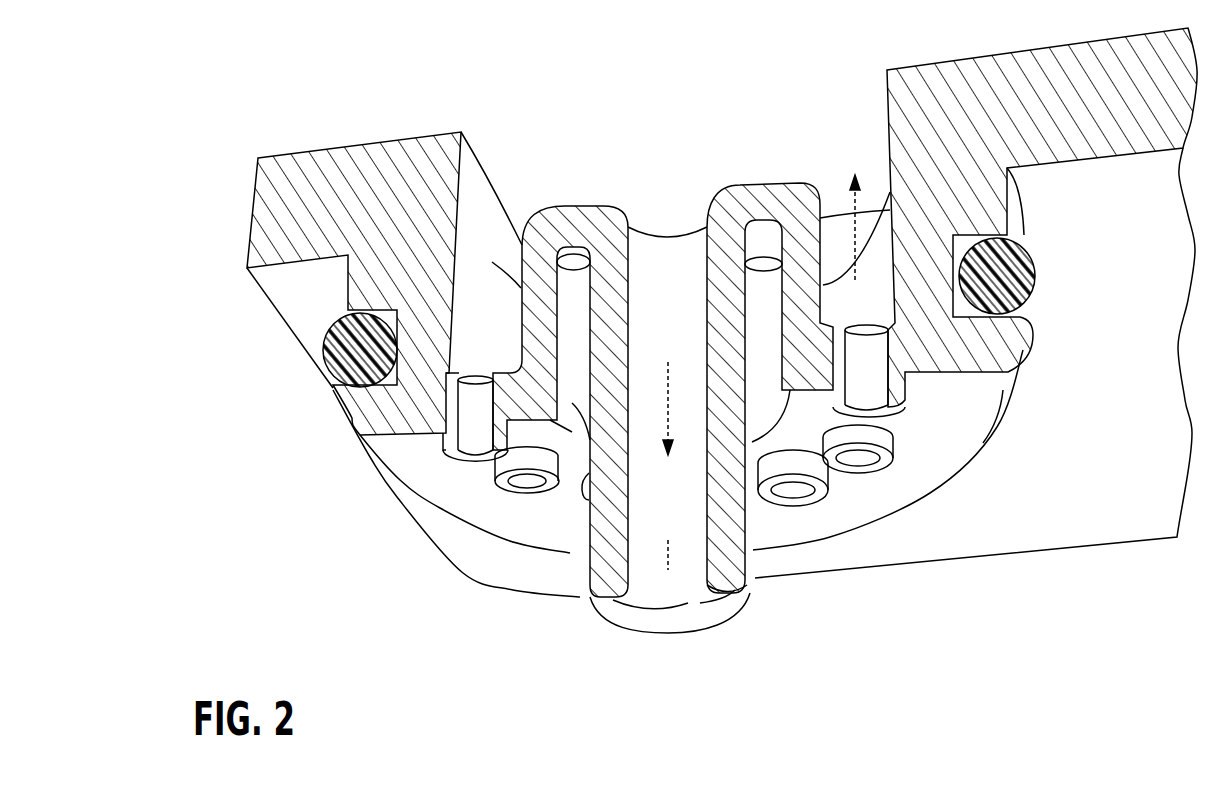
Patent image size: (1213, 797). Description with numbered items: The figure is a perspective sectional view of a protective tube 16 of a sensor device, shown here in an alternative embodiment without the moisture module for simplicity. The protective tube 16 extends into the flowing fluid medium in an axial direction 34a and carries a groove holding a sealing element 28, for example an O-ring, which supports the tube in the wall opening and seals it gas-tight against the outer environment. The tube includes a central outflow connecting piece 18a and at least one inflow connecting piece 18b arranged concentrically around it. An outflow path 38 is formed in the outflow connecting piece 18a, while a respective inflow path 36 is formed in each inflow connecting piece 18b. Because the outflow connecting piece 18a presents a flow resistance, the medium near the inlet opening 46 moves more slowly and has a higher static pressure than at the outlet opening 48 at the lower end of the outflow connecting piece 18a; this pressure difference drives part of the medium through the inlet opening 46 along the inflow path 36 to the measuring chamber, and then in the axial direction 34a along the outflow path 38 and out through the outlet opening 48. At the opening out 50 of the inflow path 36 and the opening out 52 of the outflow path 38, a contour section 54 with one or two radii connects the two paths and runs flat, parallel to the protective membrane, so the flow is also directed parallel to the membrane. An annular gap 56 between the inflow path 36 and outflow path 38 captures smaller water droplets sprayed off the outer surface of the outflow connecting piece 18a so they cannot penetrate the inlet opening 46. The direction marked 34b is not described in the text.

The protective tube 16 is at (286, 436).
The outflow connecting piece 18a is at (745, 588).
The inflow connecting piece 18b is at (884, 457).
The sealing element 28 is at (348, 347).
The axial direction 34a is at (612, 565).
The second channel 34b is at (870, 227).
The inflow path 36 is at (880, 260).
The outflow path 38 is at (668, 263).
The inlet opening 46 is at (477, 447).
The outlet opening 48 is at (692, 592).
The opening out of inflow path 50 is at (815, 188).
The opening out of outflow path 52 is at (713, 227).
The contour section 54 is at (763, 187).
The annular gap 56 is at (573, 403).